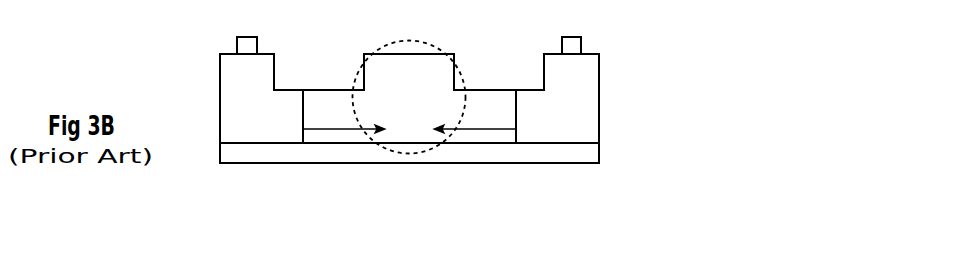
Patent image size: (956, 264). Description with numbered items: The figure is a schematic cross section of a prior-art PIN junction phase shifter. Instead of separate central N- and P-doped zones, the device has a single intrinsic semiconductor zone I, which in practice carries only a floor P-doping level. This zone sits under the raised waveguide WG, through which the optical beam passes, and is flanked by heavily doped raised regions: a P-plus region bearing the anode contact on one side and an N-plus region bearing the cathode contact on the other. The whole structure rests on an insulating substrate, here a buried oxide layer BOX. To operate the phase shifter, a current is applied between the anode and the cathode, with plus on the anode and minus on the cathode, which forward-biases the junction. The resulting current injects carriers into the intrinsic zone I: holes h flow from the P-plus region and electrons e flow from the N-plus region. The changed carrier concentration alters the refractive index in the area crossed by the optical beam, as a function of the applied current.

The buried oxide layer BOX is at (409, 153).
The waveguide WG is at (372, 85).
The intrinsic semiconductor zone I is at (413, 102).
The electrons e is at (344, 121).
The holes h is at (475, 121).